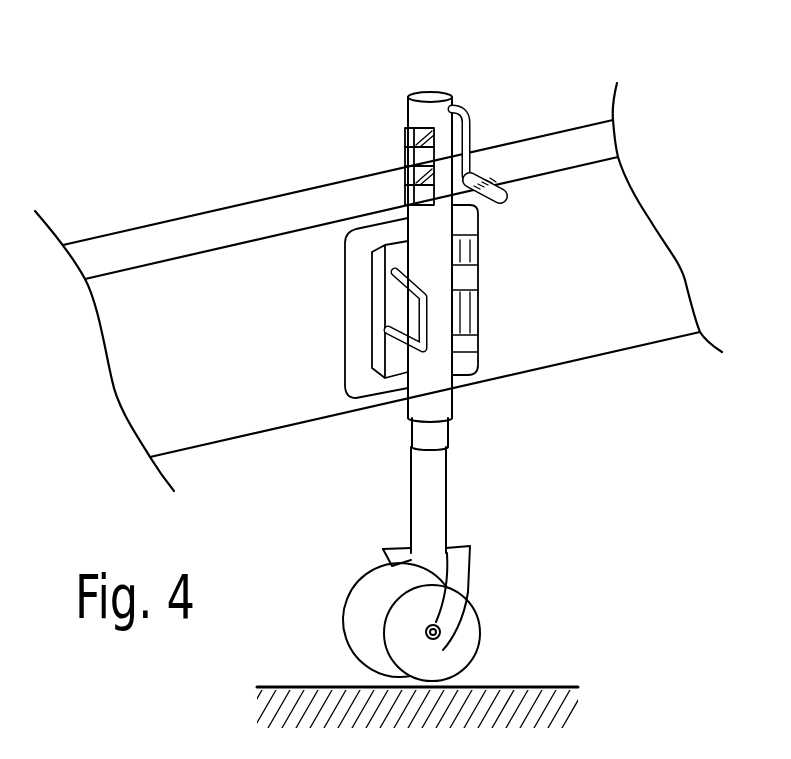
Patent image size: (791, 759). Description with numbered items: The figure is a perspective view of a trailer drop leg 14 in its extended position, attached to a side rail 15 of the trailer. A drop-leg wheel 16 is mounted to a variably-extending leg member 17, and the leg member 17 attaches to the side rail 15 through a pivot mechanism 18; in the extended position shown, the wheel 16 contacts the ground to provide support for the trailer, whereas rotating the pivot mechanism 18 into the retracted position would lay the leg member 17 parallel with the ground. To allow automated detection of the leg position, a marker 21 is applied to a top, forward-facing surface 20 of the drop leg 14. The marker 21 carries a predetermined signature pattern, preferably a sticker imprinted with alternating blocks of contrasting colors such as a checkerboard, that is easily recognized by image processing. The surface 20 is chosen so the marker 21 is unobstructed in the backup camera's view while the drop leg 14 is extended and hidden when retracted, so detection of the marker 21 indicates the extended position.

The drop leg 14 is at (518, 443).
The side rail 15 is at (170, 245).
The drop-leg wheel 16 is at (455, 652).
The leg member 17 is at (412, 494).
The pivot mechanism 18 is at (352, 304).
The top, forward-facing surface 20 is at (410, 108).
The marker 21 is at (404, 143).